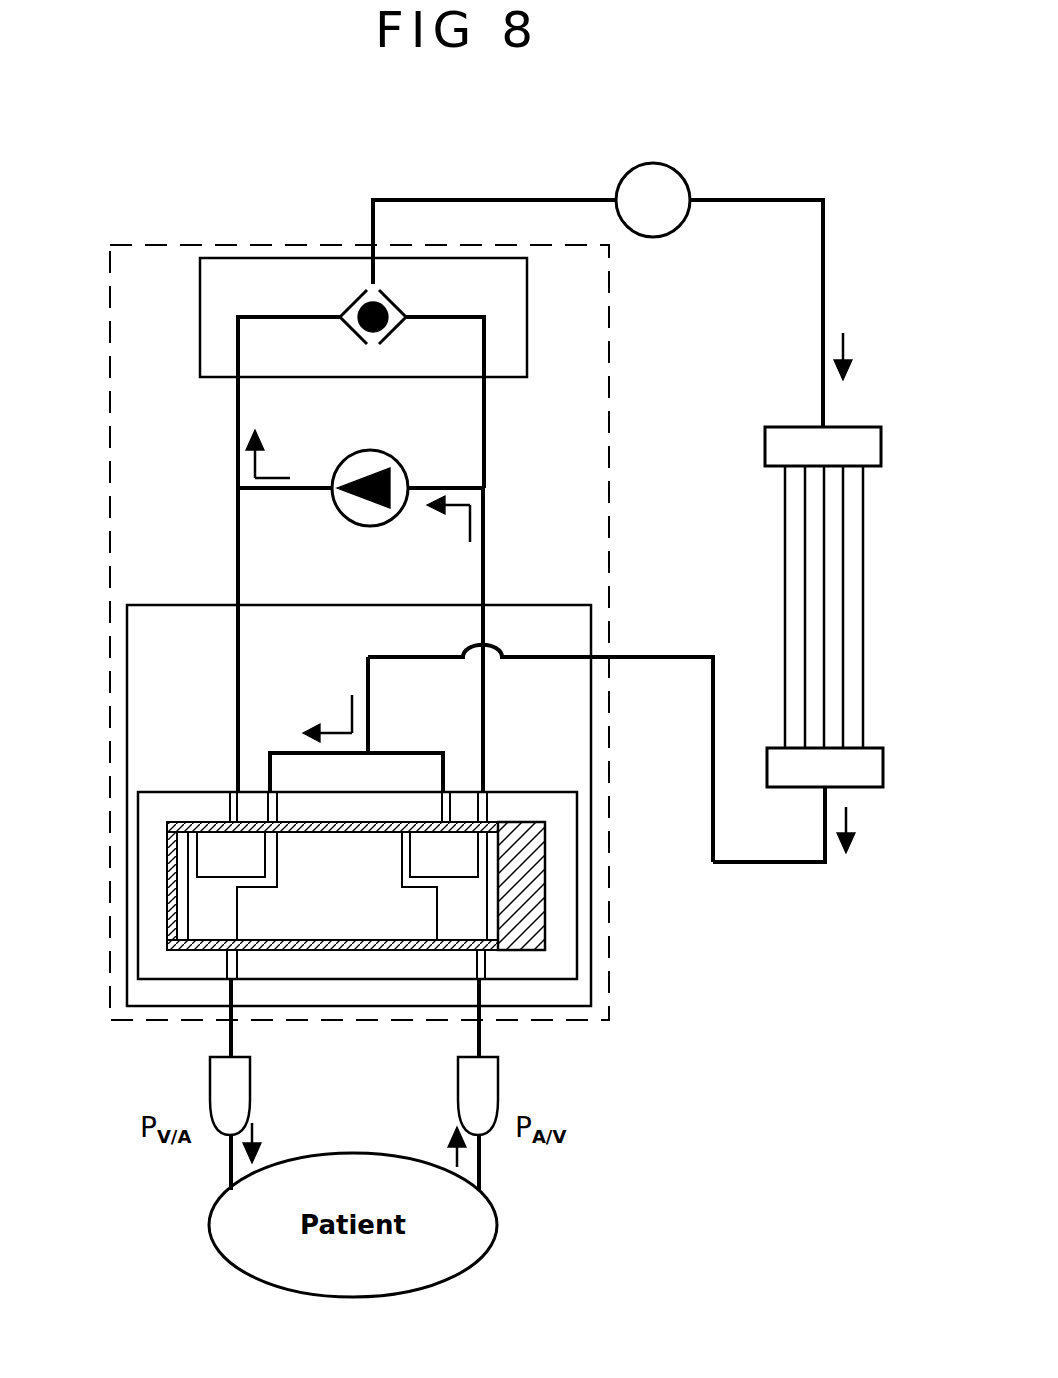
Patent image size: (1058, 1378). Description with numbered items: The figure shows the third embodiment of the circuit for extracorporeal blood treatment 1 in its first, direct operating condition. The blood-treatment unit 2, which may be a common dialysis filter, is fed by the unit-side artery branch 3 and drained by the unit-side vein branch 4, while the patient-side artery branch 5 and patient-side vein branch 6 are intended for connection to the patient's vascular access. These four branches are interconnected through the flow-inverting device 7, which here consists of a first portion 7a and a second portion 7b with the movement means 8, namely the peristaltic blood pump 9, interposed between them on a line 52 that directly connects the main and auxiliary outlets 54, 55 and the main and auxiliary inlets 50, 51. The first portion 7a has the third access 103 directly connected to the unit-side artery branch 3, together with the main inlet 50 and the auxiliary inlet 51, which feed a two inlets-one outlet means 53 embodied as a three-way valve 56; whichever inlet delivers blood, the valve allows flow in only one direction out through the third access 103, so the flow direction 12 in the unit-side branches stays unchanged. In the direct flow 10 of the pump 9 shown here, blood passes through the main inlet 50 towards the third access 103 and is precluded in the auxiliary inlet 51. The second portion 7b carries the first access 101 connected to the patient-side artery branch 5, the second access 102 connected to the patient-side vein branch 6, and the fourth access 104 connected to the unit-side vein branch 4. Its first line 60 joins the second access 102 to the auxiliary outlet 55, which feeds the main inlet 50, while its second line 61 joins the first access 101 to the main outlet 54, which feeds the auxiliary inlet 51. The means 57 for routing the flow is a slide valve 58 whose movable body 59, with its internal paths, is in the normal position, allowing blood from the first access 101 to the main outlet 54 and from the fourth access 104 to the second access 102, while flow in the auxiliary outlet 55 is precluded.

The circuit for extracorporeal blood treatment 1 is at (667, 1157).
The blood-treatment unit 2 is at (862, 563).
The unit-side artery branch 3 is at (826, 250).
The unit-side vein branch 4 is at (800, 862).
The patient-side artery branch 5 is at (478, 1163).
The patient-side vein branch 6 is at (230, 1167).
The flow-inverting device 7 is at (105, 847).
The first portion 7a is at (200, 290).
The second portion 7b is at (127, 683).
The movement means 8 is at (332, 510).
The blood pump 9 is at (350, 462).
The direct flow 10 is at (393, 455).
The flow direction 12 is at (847, 337).
The main inlet 50 is at (238, 340).
The auxiliary inlet 51 is at (484, 350).
The line 52 is at (455, 488).
The two inlets-one outlet means 53 is at (345, 285).
The main outlet 54 is at (487, 618).
The auxiliary outlet 55 is at (238, 636).
The three-way valve 56 is at (388, 306).
The means for allowing blood flow 57 is at (91, 953).
The valve 58 is at (565, 963).
The movable body 59 is at (452, 858).
The first line 60 is at (238, 737).
The second line 61 is at (483, 715).
The first access 101 is at (480, 995).
The second access 102 is at (232, 995).
The third access 103 is at (398, 200).
The fourth access 104 is at (560, 655).